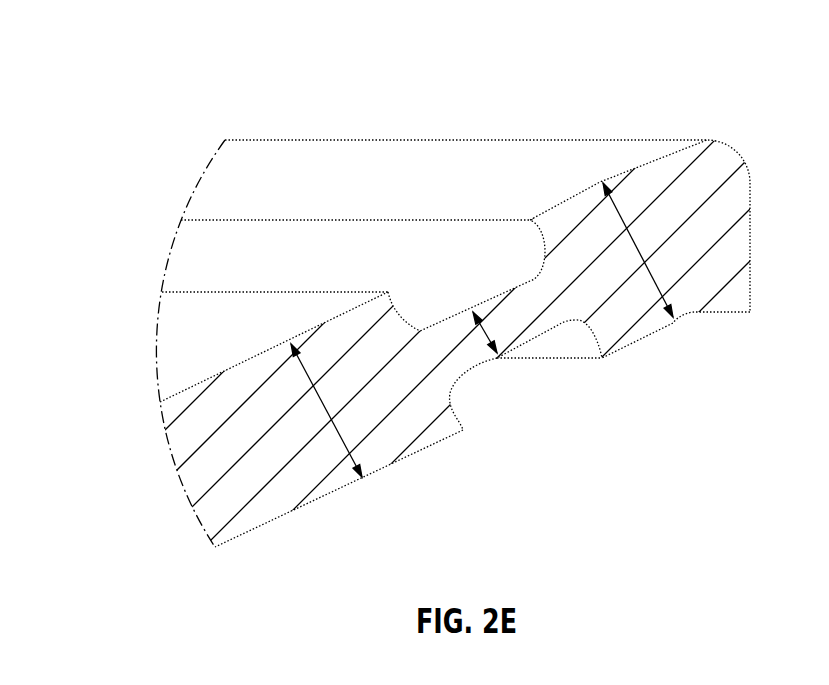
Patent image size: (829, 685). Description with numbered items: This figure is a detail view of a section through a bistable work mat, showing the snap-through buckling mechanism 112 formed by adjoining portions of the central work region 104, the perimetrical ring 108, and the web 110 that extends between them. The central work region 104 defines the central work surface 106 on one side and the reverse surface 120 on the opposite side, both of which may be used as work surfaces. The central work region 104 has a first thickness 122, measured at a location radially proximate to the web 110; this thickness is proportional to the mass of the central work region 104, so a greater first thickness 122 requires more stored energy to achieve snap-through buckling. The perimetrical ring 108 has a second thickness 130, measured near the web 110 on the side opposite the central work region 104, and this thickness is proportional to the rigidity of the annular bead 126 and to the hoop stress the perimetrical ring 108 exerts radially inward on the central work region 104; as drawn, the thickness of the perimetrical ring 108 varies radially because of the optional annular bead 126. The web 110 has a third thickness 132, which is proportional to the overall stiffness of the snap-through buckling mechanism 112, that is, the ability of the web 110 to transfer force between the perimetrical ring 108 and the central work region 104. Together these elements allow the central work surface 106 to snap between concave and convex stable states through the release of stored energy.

The central work region 104 is at (181, 361).
The central work surface 106 is at (217, 332).
The perimetrical ring 108 is at (518, 158).
The web 110 is at (463, 295).
The snap-through buckling mechanism 112 is at (158, 181).
The reverse surface 120 is at (423, 452).
The first thickness 122 is at (314, 433).
The annular bead 126 is at (727, 302).
The second thickness 130 is at (621, 284).
The third thickness 132 is at (481, 359).